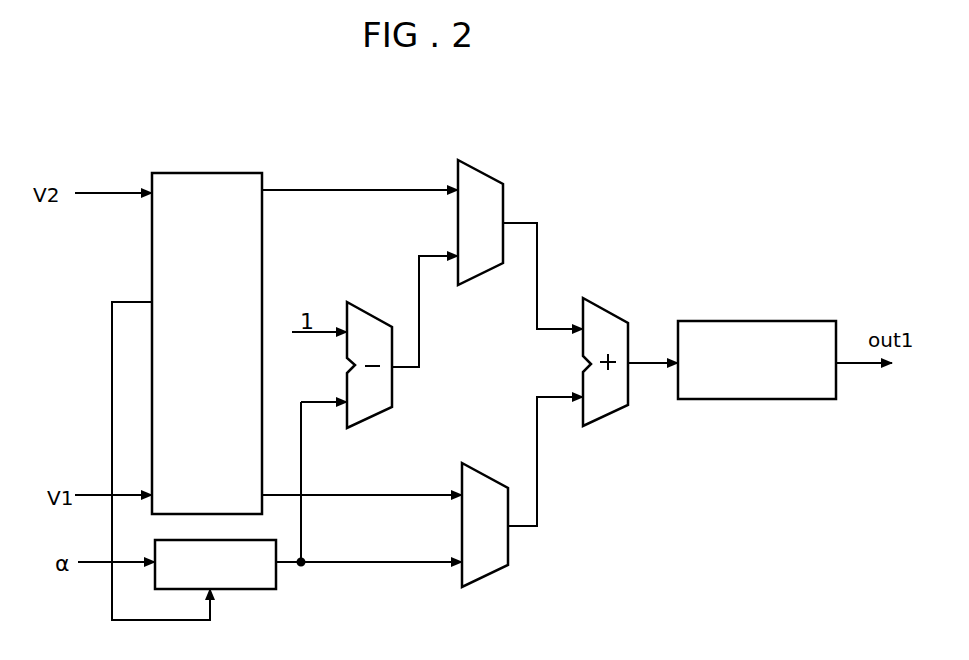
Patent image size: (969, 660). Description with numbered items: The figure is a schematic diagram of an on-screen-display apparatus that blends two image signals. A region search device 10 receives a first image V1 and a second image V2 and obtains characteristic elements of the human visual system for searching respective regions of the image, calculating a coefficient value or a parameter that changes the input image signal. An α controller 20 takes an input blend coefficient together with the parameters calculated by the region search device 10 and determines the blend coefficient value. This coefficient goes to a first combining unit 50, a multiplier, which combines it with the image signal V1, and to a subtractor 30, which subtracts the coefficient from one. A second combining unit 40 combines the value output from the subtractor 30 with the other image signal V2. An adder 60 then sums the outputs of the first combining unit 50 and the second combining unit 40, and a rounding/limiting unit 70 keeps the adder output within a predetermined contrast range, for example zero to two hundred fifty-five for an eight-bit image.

The region search device 10 is at (203, 185).
The α controller 20 is at (245, 590).
The subtractor 30 is at (372, 322).
The second combining unit 40 is at (482, 182).
The first combining unit 50 is at (487, 485).
The adder 60 is at (606, 318).
The rounding/limiting unit 70 is at (755, 332).